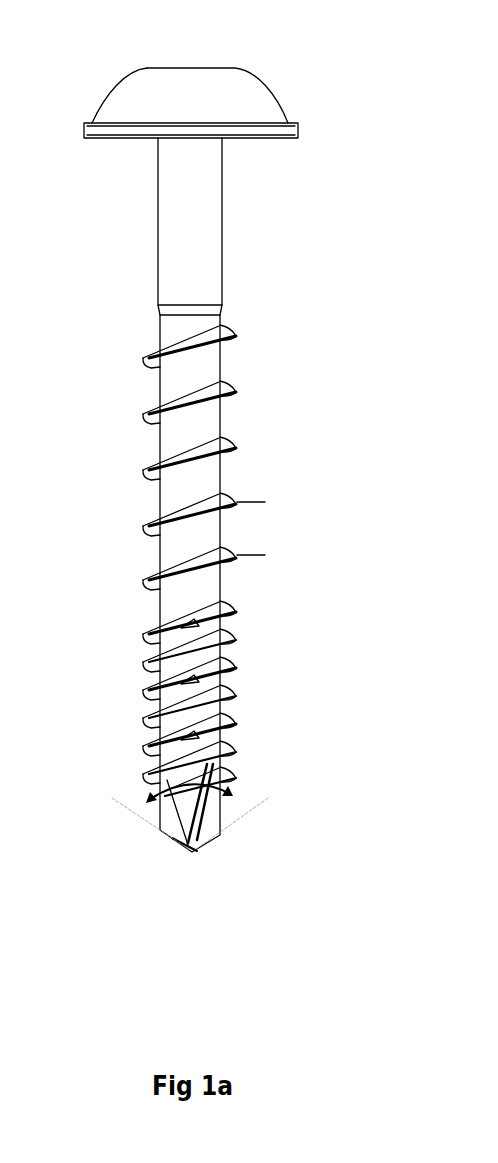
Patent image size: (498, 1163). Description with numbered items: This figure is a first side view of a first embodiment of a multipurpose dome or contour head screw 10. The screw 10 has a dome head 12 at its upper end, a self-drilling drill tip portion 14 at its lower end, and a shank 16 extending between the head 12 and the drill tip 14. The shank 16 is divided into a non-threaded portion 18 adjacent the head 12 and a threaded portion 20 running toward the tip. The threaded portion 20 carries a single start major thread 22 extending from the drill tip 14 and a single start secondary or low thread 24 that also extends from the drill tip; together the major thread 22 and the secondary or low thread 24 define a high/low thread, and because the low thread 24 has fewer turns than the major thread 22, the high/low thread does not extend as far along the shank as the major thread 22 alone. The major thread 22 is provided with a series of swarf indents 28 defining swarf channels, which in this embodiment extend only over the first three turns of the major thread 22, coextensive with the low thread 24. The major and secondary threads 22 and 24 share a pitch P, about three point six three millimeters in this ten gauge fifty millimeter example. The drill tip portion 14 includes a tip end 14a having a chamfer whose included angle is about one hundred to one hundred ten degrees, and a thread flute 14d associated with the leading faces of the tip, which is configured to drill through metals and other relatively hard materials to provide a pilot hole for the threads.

The dome or contour head screw 10 is at (206, 463).
The dome head 12 is at (106, 99).
The self-drilling drill tip portion 14 is at (223, 834).
The tip end 14a is at (203, 850).
The thread flute 14d is at (189, 810).
The shank 16 is at (266, 420).
The non-threaded portion 18 is at (224, 141).
The threaded portion 20 is at (206, 583).
The major thread 22 is at (236, 672).
The secondary or low thread 24 is at (226, 754).
The swarf indents 28 is at (236, 612).
The pitch P is at (249, 545).